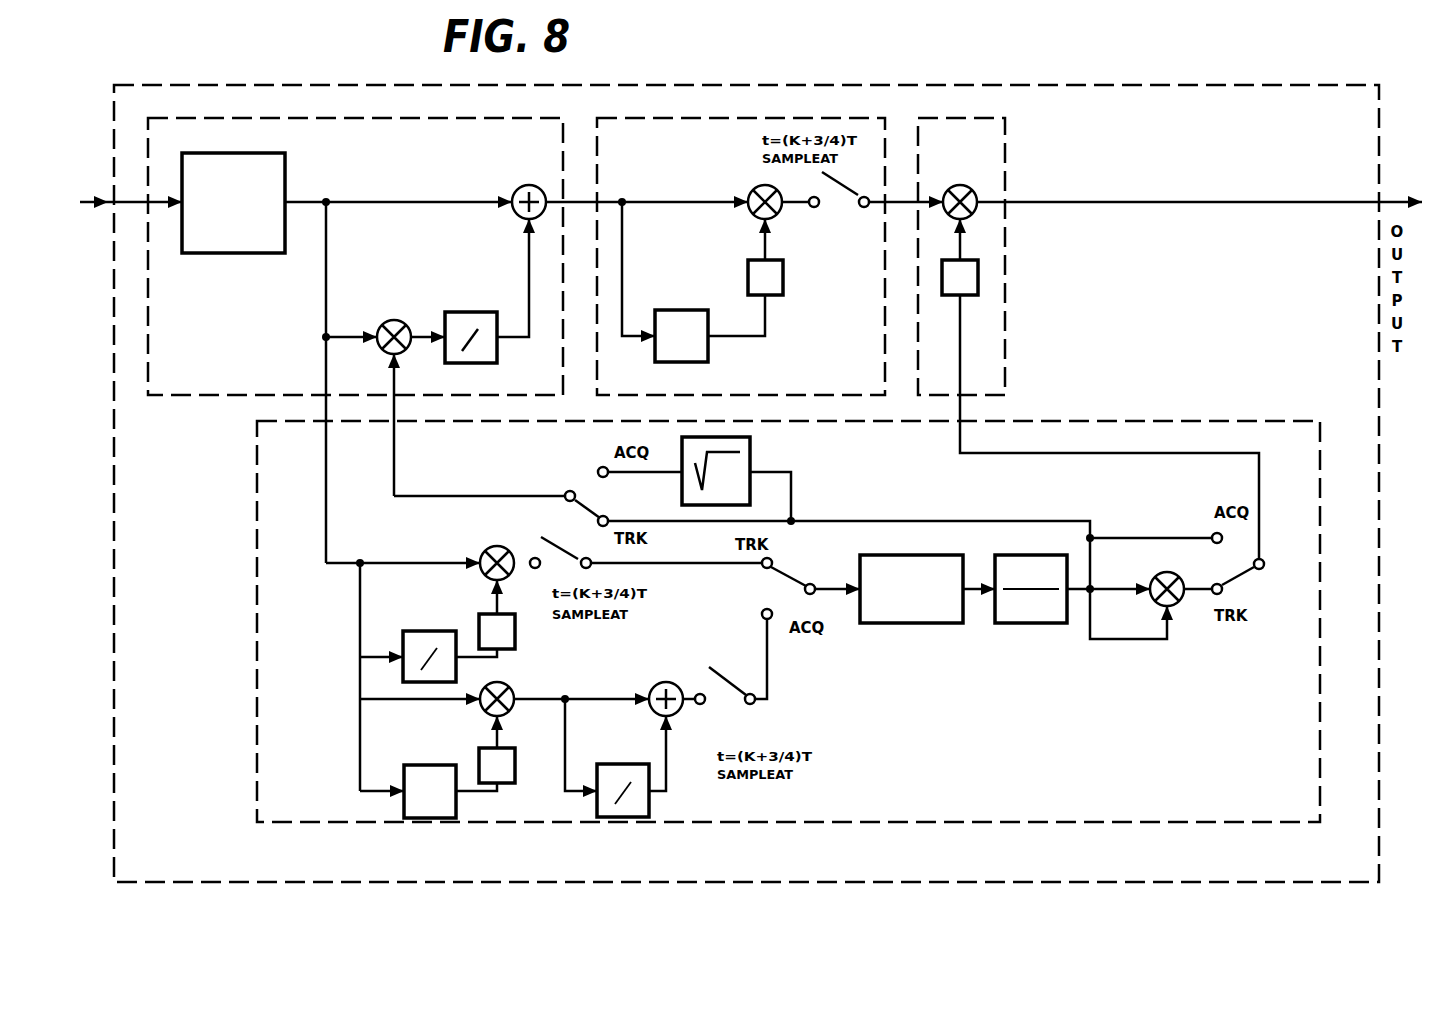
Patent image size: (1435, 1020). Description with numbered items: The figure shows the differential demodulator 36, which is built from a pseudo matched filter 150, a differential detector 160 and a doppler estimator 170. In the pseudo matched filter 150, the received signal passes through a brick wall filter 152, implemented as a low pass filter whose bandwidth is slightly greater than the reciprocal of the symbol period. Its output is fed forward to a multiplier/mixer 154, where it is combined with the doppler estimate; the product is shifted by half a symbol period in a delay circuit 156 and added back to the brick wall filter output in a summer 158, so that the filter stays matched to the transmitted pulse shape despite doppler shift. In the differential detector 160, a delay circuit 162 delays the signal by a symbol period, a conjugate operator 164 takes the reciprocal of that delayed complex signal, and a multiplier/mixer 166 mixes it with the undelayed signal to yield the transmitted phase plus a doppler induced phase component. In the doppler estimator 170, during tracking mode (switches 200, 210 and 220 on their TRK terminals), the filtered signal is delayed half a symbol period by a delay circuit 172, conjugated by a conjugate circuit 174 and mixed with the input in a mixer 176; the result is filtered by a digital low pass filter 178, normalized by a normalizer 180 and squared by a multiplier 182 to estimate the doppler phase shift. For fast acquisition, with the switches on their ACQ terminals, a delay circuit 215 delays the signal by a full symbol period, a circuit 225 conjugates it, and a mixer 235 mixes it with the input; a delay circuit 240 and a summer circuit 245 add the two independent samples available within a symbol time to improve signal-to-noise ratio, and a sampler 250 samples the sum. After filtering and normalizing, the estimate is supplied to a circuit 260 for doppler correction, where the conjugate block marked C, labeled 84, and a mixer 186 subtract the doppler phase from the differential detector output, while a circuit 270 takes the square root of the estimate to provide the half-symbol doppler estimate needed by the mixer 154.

The differential demodulator 36 is at (1200, 82).
The constant multiplier C 84 is at (978, 278).
The pseudo matched filter 150 is at (297, 117).
The brick wall filter 152 is at (257, 255).
The multiplier/mixer 154 is at (392, 320).
The delay circuit 156 is at (477, 310).
The summer 158 is at (520, 187).
The differential detector 160 is at (818, 117).
The delay circuit 162 is at (708, 348).
The conjugate operator 164 is at (748, 278).
The multiplier/mixer 166 is at (760, 187).
The doppler estimator 170 is at (256, 727).
The delay circuit 172 is at (444, 631).
The conjugate circuit 174 is at (515, 649).
The mixer 176 is at (482, 548).
The digital low pass filter 178 is at (887, 625).
The normalizer 180 is at (1022, 617).
The multiplier 182 is at (1177, 600).
The mixer 186 is at (972, 212).
The switch 200 is at (787, 574).
The switch 210 is at (1242, 577).
The delay circuit 215 is at (430, 818).
The switch 220 is at (593, 505).
The conjugation circuit 225 is at (515, 783).
The mixer 235 is at (483, 711).
The delay circuit 240 is at (649, 807).
The summer circuit 245 is at (661, 684).
The sampler 250 is at (728, 675).
The doppler correction circuit 260 is at (1007, 135).
The square root circuit 270 is at (752, 458).